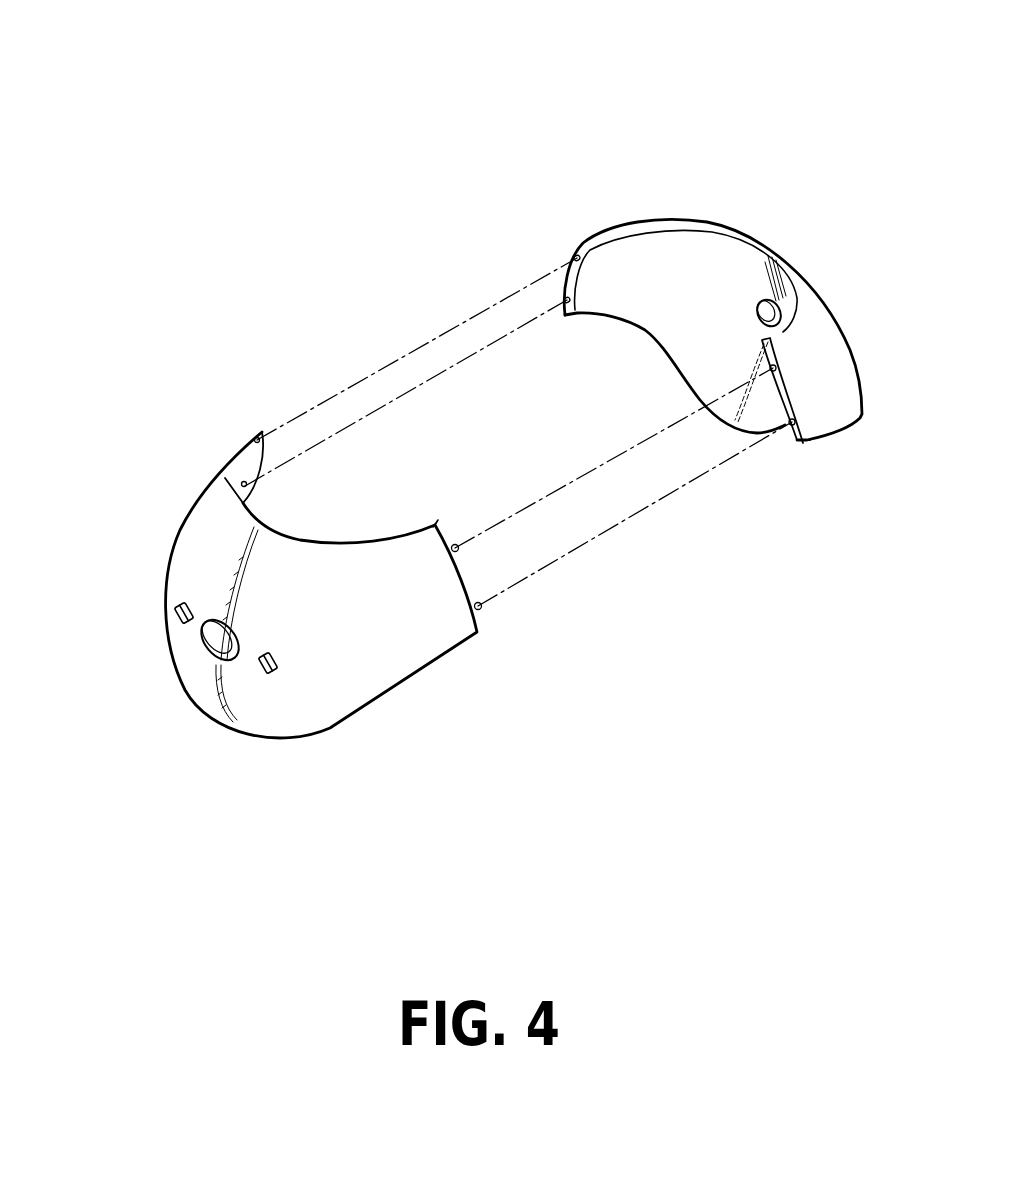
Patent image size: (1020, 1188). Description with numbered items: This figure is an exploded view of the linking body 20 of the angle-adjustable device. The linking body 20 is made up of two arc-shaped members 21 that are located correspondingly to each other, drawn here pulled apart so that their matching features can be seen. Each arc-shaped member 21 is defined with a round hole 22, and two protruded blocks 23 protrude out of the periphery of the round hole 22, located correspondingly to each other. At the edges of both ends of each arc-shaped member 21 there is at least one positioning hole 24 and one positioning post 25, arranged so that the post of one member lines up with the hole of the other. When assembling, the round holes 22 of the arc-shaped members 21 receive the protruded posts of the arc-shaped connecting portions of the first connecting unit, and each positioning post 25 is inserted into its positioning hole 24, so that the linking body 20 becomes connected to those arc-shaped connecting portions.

The linking body 20 is at (298, 148).
The arc-shaped member 21 is at (675, 265).
The round hole 22 is at (775, 312).
The protruded block 23 is at (180, 610).
The positioning hole 24 is at (252, 428).
The positioning post 25 is at (573, 257).